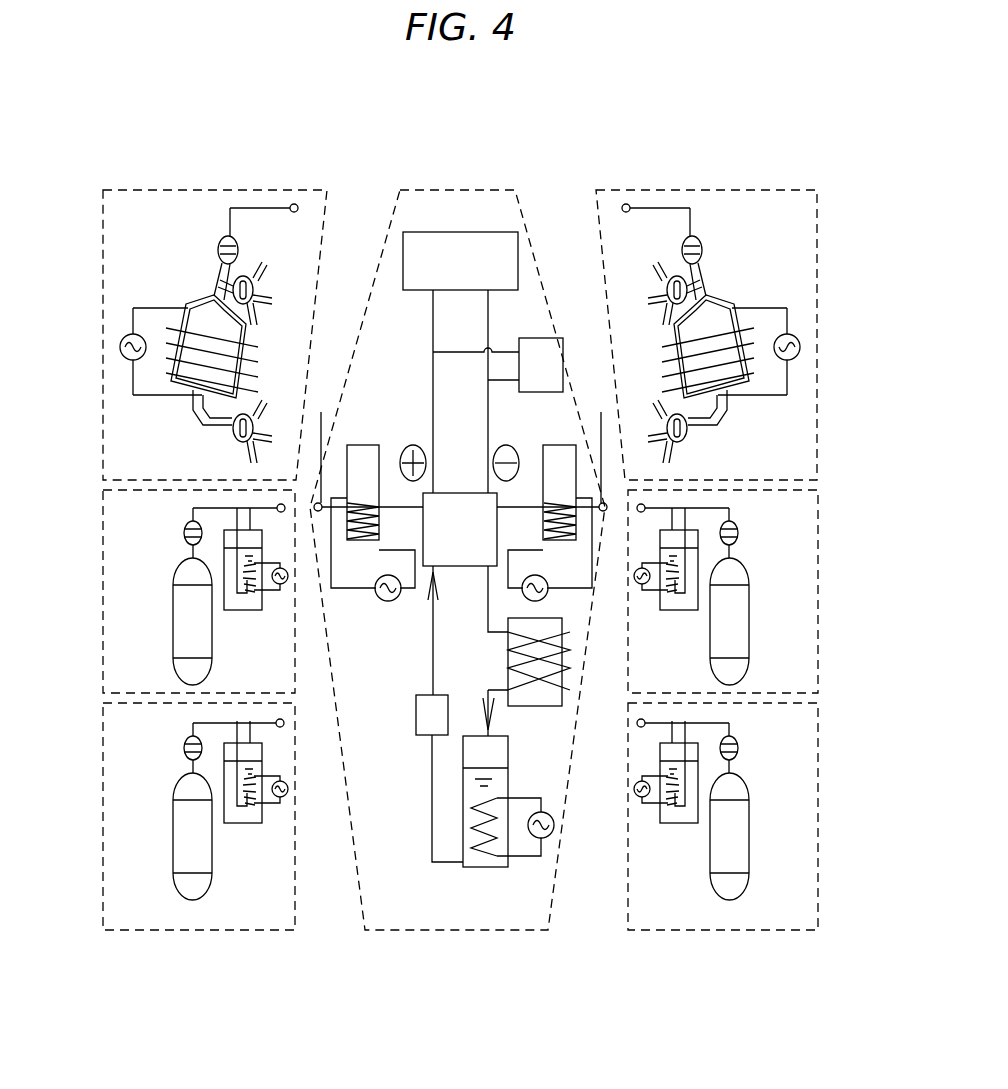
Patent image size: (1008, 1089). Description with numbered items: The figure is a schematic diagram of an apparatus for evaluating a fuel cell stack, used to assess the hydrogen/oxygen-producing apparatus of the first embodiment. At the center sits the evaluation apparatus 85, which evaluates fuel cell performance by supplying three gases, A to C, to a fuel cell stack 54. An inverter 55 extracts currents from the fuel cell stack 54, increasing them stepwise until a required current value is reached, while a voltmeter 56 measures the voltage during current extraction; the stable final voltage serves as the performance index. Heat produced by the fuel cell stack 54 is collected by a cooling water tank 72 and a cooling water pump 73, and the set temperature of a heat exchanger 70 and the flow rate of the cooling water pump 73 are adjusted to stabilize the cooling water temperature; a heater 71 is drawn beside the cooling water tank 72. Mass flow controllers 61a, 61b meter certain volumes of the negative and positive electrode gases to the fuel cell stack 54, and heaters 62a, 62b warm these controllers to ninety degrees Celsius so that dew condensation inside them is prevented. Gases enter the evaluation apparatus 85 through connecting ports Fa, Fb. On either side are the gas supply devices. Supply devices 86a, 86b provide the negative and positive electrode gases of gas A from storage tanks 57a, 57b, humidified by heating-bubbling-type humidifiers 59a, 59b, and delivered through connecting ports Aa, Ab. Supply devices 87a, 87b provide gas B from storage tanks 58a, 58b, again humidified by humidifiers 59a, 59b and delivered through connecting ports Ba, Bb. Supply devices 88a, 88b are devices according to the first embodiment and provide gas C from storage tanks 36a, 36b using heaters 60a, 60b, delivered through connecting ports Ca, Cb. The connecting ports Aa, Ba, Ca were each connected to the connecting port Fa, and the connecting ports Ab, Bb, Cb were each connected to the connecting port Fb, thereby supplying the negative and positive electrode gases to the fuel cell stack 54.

The evaluation apparatus 85 is at (446, 190).
The inverter 55 is at (475, 250).
The voltmeter 56 is at (527, 355).
The fuel cell stack 54 is at (472, 537).
The mass flow controller 61b is at (365, 468).
The mass flow controller 61a is at (561, 468).
The heater 62b is at (332, 542).
The heater 62a is at (553, 543).
The connecting port Fb is at (365, 442).
The connecting port Fa is at (554, 442).
The cooling water pump 73 is at (416, 716).
The heat exchanger 70 is at (543, 697).
The cooling water tank 72 is at (475, 853).
The humidifier heater 71 is at (543, 852).
The supply device 88b is at (138, 190).
The supply device 88a is at (805, 190).
The connecting port Cb is at (291, 205).
The connecting port Ca is at (630, 205).
The heater 60b is at (142, 308).
The heater 60a is at (787, 308).
The storage tank 36b is at (218, 258).
The storage tank 36a is at (706, 288).
The connecting port Bb is at (277, 503).
The connecting port Ba is at (646, 503).
The supply device 87b is at (103, 620).
The supply device 87a is at (818, 627).
The storage tank 58b is at (185, 595).
The storage tank 58a is at (740, 610).
The heating-bubbling-type humidifier 59b is at (233, 594).
The heating-bubbling-type humidifier 59a is at (690, 743).
The supply device 86b is at (103, 908).
The supply device 86a is at (818, 907).
The connecting port Ab is at (284, 727).
The connecting port Aa is at (638, 728).
The storage tank 57b is at (196, 790).
The storage tank 57a is at (740, 805).